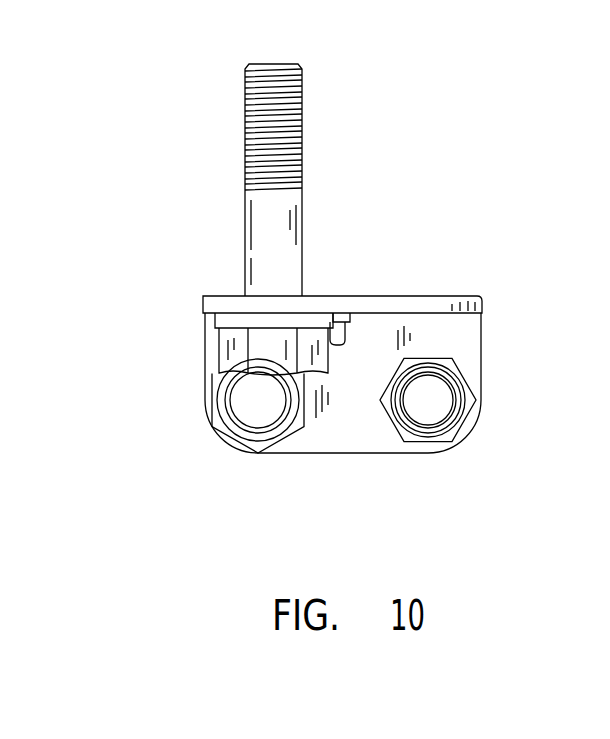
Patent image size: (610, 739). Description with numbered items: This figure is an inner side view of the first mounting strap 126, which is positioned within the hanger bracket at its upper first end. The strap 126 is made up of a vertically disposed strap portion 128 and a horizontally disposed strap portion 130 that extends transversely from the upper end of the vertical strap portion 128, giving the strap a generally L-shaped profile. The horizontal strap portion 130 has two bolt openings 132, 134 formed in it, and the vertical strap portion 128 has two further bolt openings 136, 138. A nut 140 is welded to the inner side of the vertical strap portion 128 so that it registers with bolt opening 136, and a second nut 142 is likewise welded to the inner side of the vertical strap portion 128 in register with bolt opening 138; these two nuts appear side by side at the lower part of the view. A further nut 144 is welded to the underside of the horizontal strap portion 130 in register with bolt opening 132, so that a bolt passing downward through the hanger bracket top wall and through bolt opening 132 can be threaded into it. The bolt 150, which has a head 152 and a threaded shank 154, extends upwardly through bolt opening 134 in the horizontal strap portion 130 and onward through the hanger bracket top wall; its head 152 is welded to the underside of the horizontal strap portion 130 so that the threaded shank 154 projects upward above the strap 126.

The first mounting strap 126 is at (430, 278).
The vertically disposed strap portion 128 is at (433, 343).
The horizontally disposed strap portion 130 is at (472, 297).
The bolt opening 132 is at (318, 306).
The bolt opening 134 is at (276, 296).
The bolt opening 136 is at (430, 402).
The bolt opening 138 is at (262, 410).
The nut 140 is at (470, 430).
The nut 142 is at (226, 405).
The nut 144 is at (342, 345).
The bolt 150 is at (233, 173).
The head 152 is at (225, 352).
The threaded shank 154 is at (303, 147).